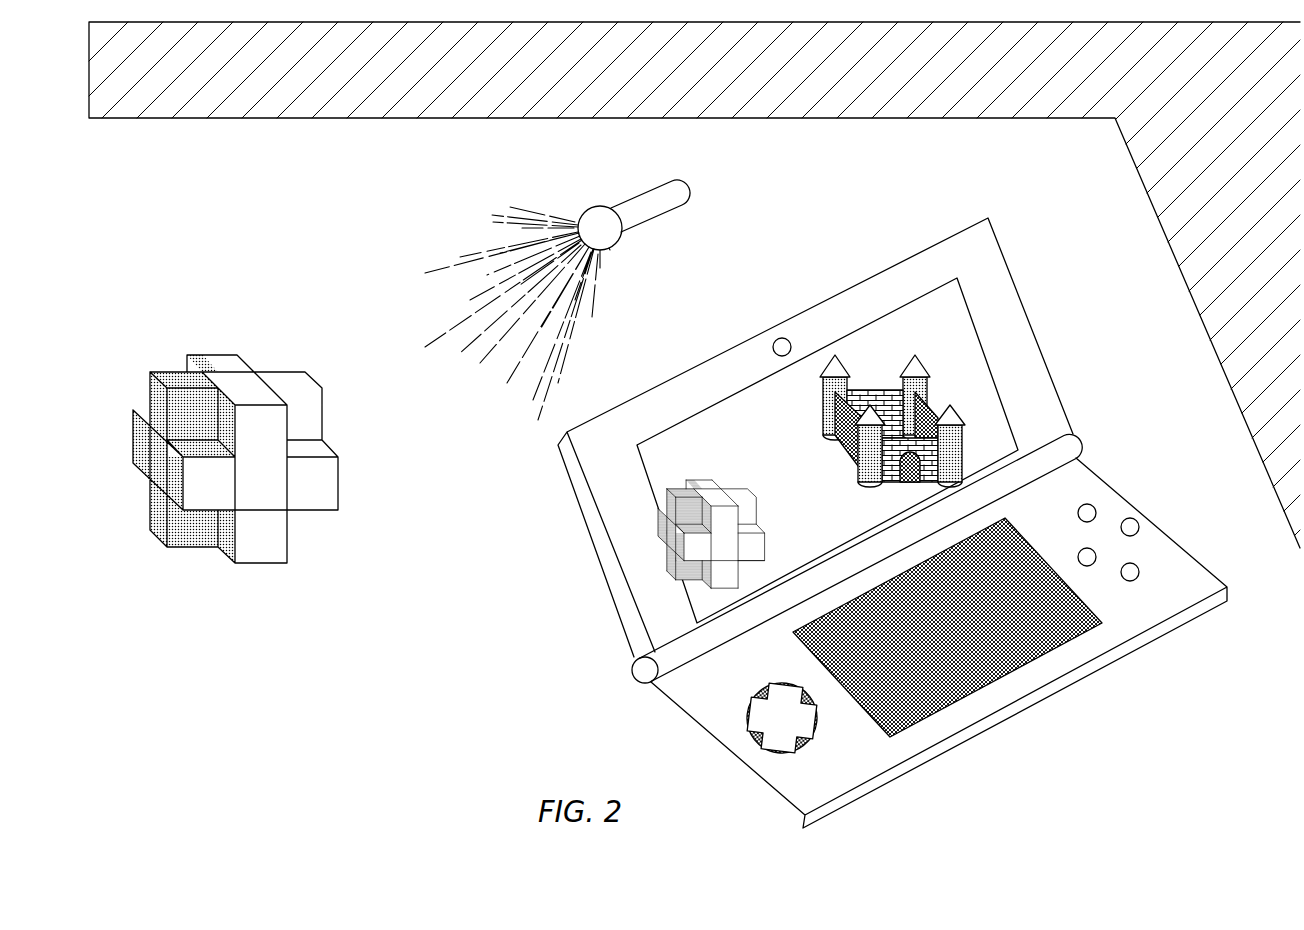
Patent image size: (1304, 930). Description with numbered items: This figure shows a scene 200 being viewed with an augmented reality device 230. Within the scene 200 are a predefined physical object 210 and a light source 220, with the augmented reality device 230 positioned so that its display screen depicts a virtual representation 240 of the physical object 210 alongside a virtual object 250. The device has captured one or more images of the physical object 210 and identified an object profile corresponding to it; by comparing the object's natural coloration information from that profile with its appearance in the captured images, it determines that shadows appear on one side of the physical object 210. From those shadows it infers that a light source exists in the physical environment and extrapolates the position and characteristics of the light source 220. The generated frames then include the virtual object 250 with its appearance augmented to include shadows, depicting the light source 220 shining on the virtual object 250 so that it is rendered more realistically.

The scene 200 is at (1203, 75).
The predefined physical object 210 is at (171, 380).
The light source 220 is at (685, 194).
The augmented reality device 230 is at (1027, 307).
The virtual representation of the physical object 240 is at (687, 547).
The virtual object 250 is at (962, 447).